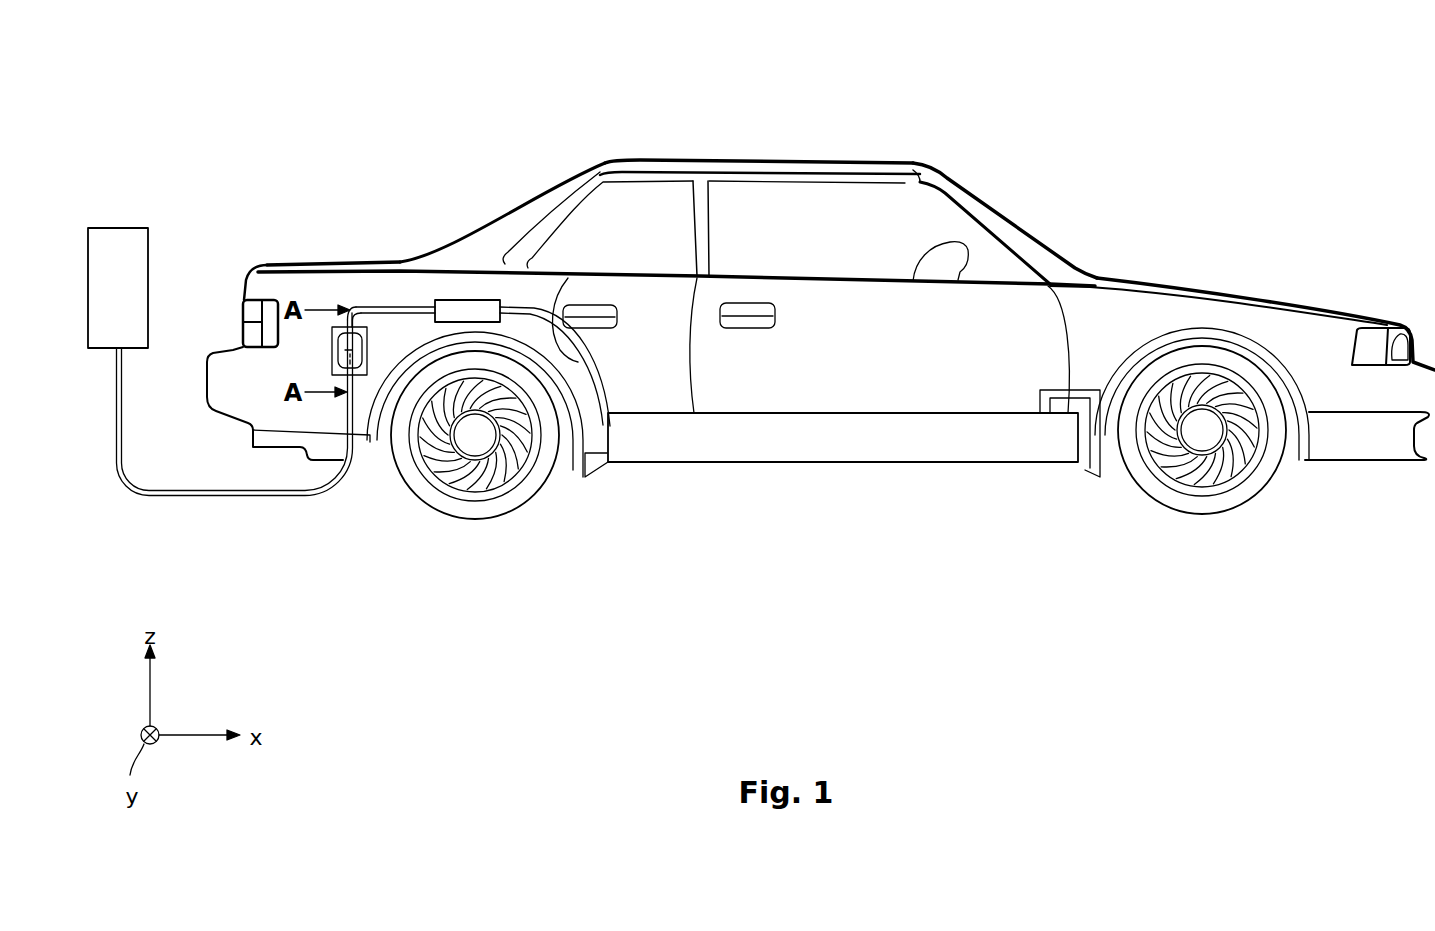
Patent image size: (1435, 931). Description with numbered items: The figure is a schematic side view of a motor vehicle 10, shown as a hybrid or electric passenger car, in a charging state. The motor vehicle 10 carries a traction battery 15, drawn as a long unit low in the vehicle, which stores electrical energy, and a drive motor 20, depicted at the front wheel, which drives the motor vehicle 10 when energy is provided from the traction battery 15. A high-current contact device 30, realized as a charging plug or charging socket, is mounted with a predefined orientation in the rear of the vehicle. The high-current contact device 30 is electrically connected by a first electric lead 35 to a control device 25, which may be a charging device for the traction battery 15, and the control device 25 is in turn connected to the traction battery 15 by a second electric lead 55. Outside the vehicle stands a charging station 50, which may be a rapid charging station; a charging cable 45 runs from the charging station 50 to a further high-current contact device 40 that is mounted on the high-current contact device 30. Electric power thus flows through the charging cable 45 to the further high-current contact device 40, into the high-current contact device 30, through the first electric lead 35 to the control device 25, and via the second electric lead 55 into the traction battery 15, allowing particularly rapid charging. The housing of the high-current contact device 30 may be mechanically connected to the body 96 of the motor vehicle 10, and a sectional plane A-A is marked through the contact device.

The motor vehicle 10 is at (192, 86).
The traction battery 15 is at (990, 440).
The drive motor 20 is at (1200, 433).
The control device 25 is at (472, 315).
The high-current contact device 30 is at (360, 309).
The first electric lead 35 is at (407, 309).
The further high-current contact device 40 is at (348, 350).
The charging cable 45 is at (258, 503).
The charging station 50 is at (153, 253).
The second electric lead 55 is at (578, 362).
The body 96 is at (600, 455).